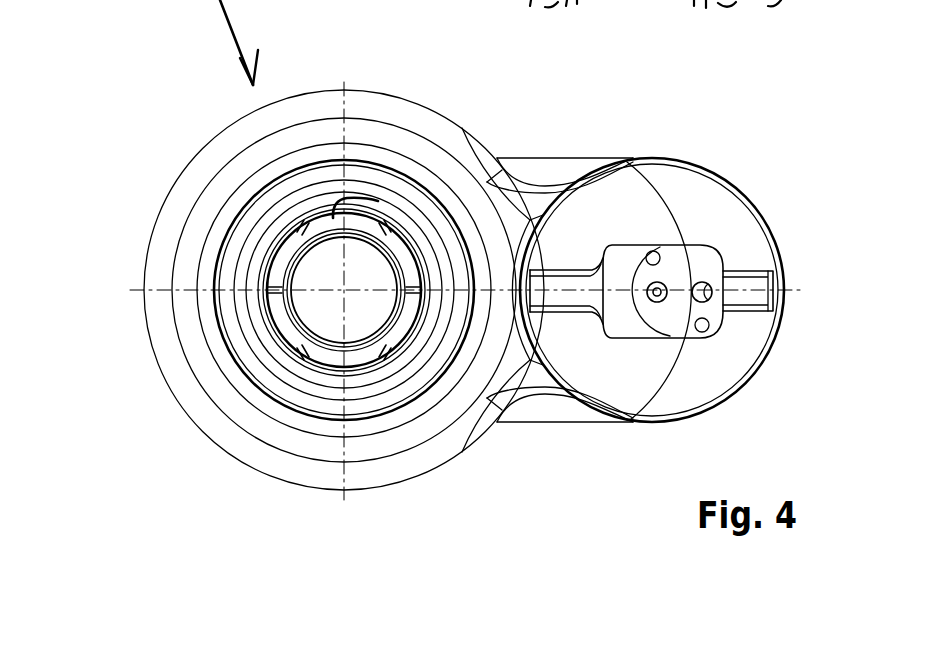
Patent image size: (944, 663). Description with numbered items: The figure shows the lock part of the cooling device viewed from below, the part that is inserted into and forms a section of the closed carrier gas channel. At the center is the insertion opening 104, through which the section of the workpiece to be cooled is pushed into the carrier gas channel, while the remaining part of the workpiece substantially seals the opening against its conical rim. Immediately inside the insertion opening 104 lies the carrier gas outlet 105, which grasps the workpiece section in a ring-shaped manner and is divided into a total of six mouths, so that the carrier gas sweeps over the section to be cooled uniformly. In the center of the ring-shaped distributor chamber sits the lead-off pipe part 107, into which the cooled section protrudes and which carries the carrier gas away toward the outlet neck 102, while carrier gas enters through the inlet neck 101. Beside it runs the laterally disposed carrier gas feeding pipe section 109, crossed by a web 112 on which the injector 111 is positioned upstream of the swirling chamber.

The inlet neck 101 is at (763, 218).
The outlet neck 102 is at (217, 447).
The insertion opening 104 is at (376, 328).
The carrier gas outlet 105 is at (346, 360).
The pipe part 107 is at (230, 248).
The carrier gas feeding pipe section 109 is at (700, 362).
The injector 111 is at (604, 258).
The web 112 is at (740, 285).